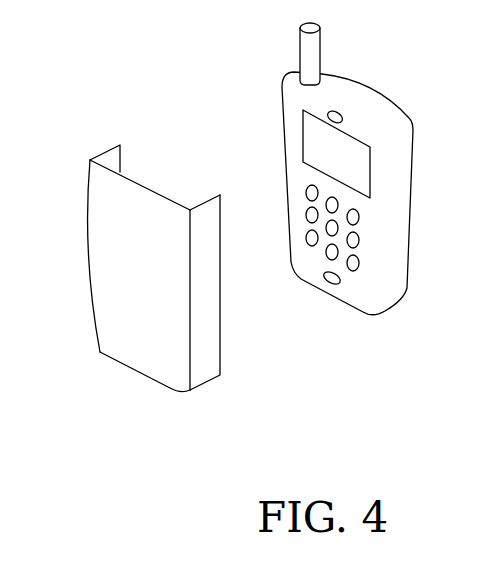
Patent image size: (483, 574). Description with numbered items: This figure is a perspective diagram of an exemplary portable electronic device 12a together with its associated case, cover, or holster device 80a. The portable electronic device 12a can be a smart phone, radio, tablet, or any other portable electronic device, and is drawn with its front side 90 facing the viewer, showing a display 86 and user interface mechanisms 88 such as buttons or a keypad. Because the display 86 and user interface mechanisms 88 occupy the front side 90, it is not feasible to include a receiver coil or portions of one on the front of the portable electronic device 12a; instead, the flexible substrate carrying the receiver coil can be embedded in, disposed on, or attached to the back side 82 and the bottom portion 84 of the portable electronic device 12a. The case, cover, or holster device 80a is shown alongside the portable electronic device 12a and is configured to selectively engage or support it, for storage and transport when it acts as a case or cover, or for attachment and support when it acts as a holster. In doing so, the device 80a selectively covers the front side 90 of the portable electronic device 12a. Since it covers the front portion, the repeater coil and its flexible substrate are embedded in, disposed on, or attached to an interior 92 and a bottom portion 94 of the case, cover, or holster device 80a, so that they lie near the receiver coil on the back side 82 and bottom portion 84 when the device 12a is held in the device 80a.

The portable electronic device 12a is at (346, 186).
The back side 82 is at (346, 193).
The bottom portion 84 is at (330, 298).
The display 86 is at (355, 167).
The user interface mechanisms 88 is at (332, 228).
The front side 90 is at (282, 135).
The case, cover, or holster device 80a is at (126, 284).
The interior 92 is at (165, 195).
The bottom portion 94 is at (133, 373).